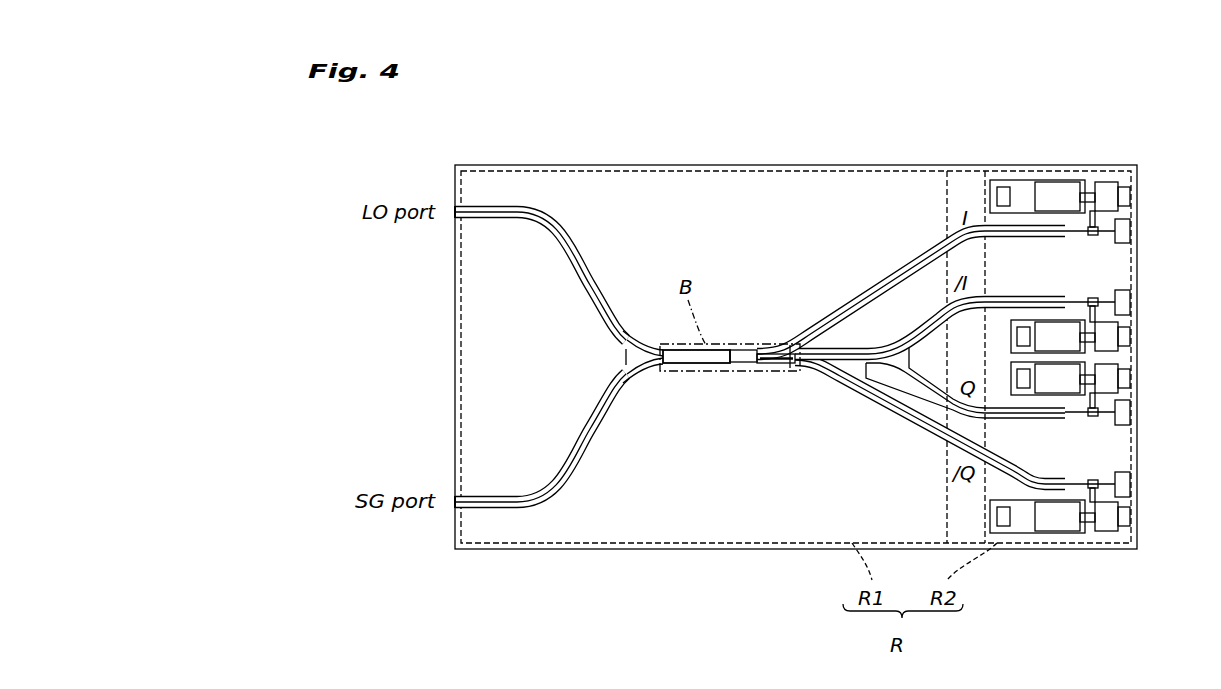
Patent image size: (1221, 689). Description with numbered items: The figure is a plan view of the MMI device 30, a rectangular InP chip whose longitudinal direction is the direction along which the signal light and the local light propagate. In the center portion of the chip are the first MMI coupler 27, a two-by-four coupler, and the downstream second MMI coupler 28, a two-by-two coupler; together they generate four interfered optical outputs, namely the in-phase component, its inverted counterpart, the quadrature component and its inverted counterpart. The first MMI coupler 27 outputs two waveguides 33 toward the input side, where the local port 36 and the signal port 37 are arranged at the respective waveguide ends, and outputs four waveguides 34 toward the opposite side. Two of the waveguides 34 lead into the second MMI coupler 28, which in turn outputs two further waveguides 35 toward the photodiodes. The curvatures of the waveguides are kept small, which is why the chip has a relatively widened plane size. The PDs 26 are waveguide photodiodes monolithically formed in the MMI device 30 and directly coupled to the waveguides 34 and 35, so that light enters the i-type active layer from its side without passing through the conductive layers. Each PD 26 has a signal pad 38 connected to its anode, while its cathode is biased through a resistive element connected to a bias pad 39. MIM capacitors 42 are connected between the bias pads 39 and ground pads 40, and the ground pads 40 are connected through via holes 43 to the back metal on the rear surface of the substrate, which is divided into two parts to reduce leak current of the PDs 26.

The MMI device 30 is at (875, 112).
The waveguides 33 is at (548, 226).
The local port 36 is at (450, 218).
The signal port 37 is at (452, 500).
The first MMI coupler 27 is at (703, 363).
The waveguides 34 is at (742, 365).
The second MMI coupler 28 is at (778, 365).
The waveguides 35 is at (910, 378).
The bias pads 39 is at (1003, 188).
The MIM capacitors 42 is at (1052, 190).
The via holes 43 is at (1110, 187).
The ground pads 40 is at (1127, 197).
The PDs 26 is at (1093, 236).
The signal pads 38 is at (1127, 230).